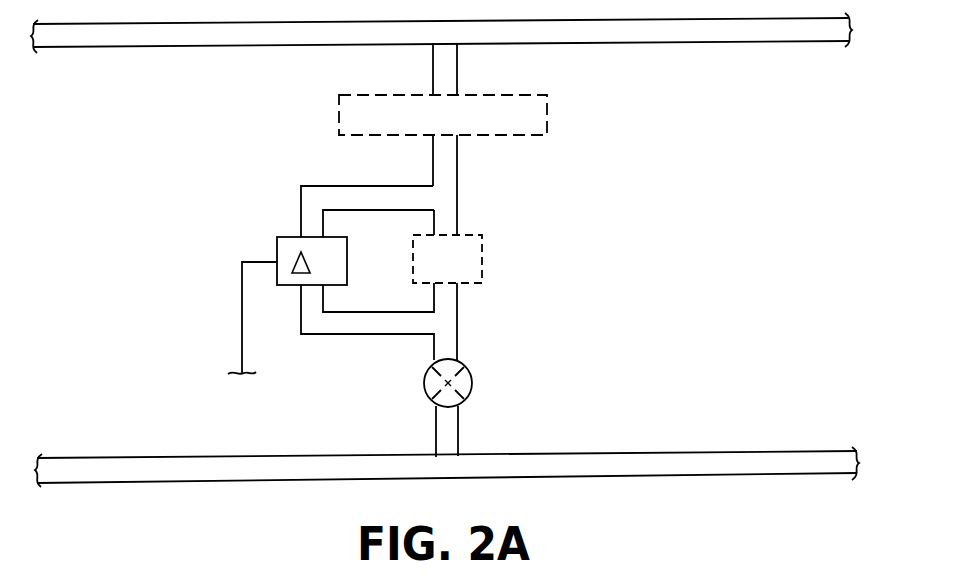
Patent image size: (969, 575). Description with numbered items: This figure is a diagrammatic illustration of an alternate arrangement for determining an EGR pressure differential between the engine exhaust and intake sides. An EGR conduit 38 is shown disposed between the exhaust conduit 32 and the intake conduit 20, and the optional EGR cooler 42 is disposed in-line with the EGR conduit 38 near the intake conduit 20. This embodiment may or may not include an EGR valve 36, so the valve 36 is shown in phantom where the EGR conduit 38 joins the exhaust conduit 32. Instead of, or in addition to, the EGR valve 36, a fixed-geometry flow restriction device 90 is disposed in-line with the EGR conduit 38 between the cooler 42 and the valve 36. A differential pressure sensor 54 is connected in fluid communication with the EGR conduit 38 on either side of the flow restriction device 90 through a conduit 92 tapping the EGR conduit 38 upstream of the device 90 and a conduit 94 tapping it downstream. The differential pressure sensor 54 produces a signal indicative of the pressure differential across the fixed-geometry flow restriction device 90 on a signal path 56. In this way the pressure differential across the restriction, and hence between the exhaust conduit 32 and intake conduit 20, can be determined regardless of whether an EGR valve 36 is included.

The intake conduit 20 is at (700, 42).
The exhaust conduit 32 is at (757, 451).
The EGR cooler 42 is at (547, 115).
The fixed-geometry flow restriction device 90 is at (482, 260).
The EGR valve 36 is at (473, 380).
The EGR conduit 38 is at (436, 425).
The differential pressure sensor 54 is at (285, 236).
The signal path 56 is at (242, 320).
The conduit 92 is at (318, 185).
The conduit 94 is at (325, 334).